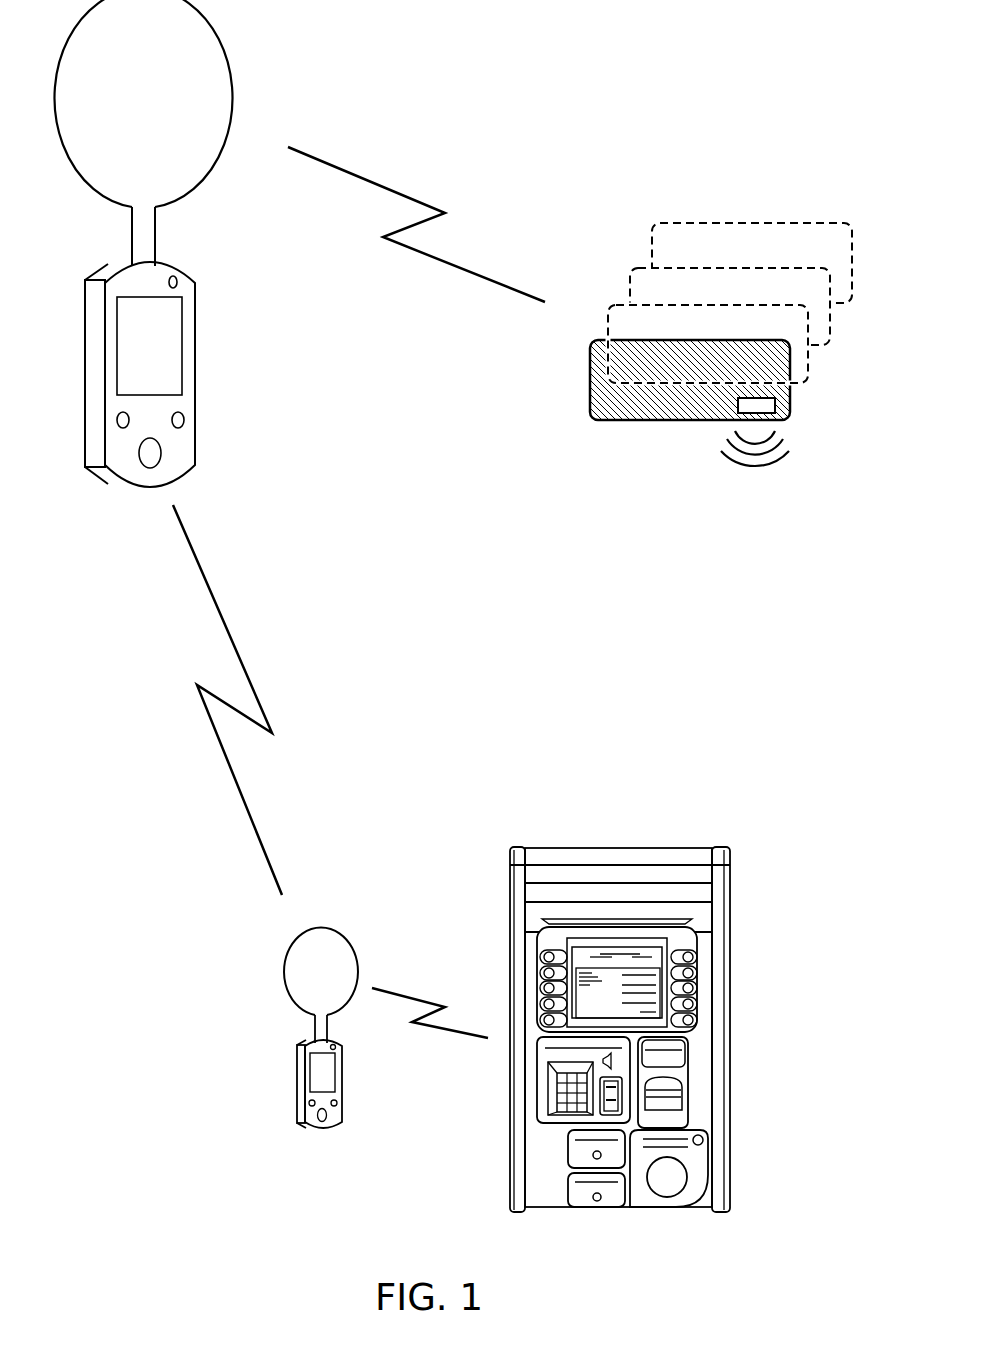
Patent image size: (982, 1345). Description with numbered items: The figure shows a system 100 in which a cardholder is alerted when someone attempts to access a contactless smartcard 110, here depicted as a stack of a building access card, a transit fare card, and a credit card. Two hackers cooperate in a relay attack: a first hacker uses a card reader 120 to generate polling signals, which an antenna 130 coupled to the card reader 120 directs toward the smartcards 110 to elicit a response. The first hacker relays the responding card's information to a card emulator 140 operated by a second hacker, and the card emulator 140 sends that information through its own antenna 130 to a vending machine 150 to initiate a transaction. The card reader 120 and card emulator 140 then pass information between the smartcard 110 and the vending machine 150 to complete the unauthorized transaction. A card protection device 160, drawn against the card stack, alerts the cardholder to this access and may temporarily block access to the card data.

The system 100 is at (689, 320).
The contactless smartcard 110 is at (653, 233).
The card reader 120 is at (195, 333).
The antenna 130 is at (232, 100).
The card emulator 140 is at (297, 1080).
The vending machine 150 is at (732, 930).
The card protection device 160 is at (590, 397).